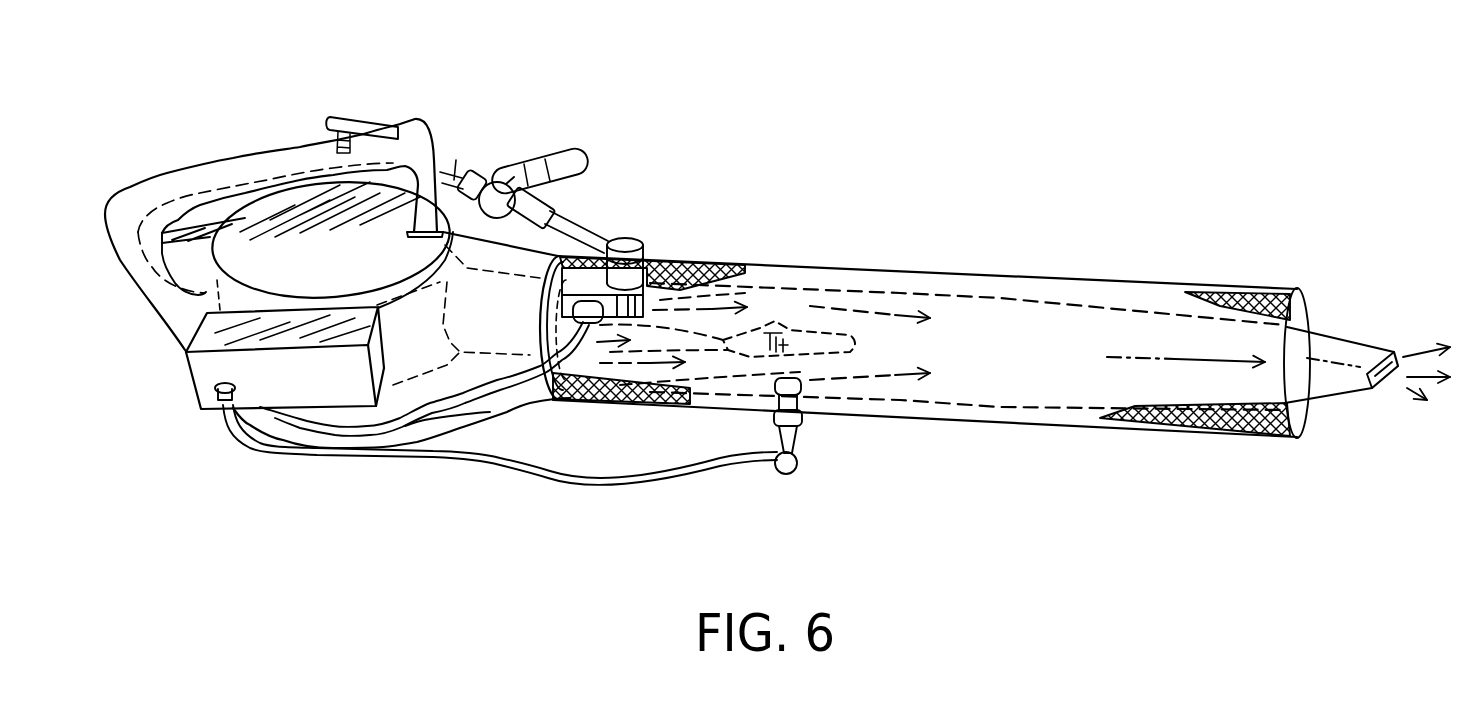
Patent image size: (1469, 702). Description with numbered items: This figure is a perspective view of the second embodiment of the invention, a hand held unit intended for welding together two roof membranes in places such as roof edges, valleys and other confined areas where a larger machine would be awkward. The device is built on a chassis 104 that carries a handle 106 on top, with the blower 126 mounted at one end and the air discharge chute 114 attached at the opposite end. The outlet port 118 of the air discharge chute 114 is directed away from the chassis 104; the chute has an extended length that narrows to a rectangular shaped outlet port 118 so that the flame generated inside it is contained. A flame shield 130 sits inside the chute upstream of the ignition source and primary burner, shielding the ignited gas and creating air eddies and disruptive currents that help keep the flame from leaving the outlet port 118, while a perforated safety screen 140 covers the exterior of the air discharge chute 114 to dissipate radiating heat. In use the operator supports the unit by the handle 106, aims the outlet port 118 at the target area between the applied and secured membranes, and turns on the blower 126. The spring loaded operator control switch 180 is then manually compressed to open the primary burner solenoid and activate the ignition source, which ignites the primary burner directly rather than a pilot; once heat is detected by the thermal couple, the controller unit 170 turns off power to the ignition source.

The chassis 104 is at (478, 419).
The handle 106 is at (243, 162).
The air discharge chute 114 is at (1012, 298).
The outlet port 118 is at (1378, 390).
The blower 126 is at (407, 355).
The flame shield 130 is at (767, 320).
The perforated safety screen 140 is at (1165, 430).
The controller unit 170 is at (297, 378).
The operator control switch 180 is at (360, 118).